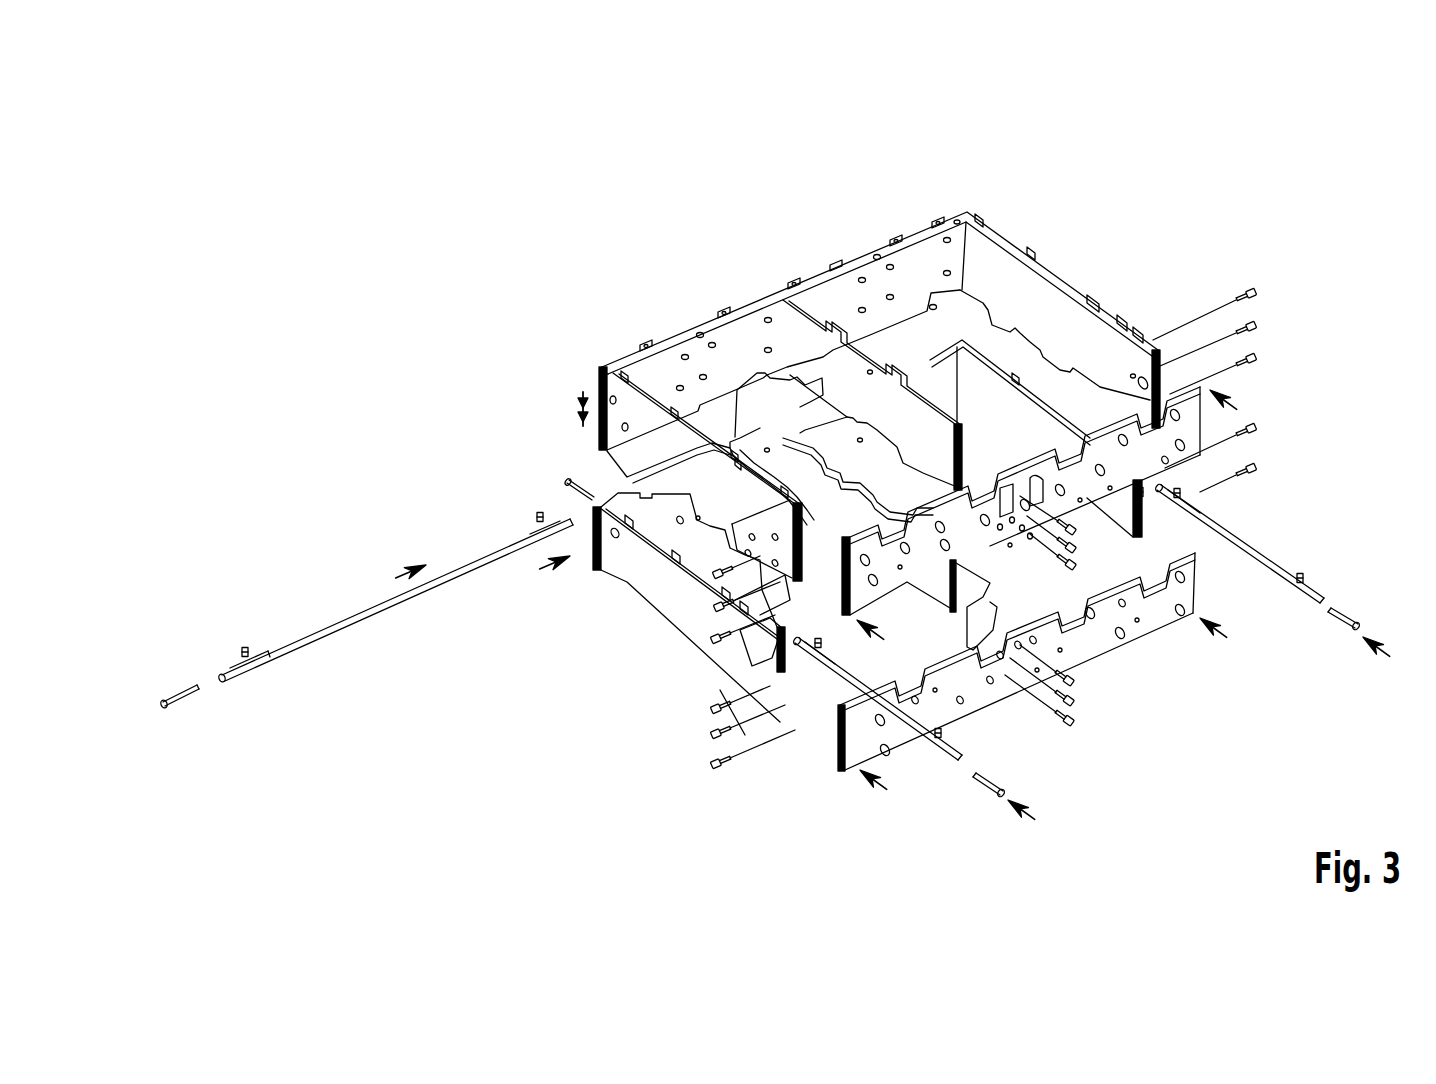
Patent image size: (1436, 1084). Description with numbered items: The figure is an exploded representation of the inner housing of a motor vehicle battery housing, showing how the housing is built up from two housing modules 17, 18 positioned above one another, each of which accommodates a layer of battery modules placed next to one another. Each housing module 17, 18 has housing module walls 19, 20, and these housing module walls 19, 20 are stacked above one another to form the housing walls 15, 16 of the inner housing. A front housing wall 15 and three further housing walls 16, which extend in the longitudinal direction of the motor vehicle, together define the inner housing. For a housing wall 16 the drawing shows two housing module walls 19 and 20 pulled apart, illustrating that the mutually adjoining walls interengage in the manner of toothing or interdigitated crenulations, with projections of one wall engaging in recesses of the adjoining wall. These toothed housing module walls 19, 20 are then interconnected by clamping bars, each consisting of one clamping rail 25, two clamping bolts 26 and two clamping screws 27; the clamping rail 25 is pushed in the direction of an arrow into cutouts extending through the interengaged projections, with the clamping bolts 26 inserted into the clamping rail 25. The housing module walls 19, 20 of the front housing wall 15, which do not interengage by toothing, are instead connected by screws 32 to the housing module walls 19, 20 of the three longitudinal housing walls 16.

The housing wall 15 is at (793, 190).
The housing wall 16 is at (742, 248).
The housing module 17 is at (563, 397).
The housing module 18 is at (551, 566).
The housing module wall 19 is at (807, 330).
The housing module wall 20 is at (750, 459).
The clamping rail 25 is at (322, 627).
The clamping bolt 26 is at (245, 646).
The clamping screw 27 is at (180, 688).
The screw 32 is at (1254, 328).